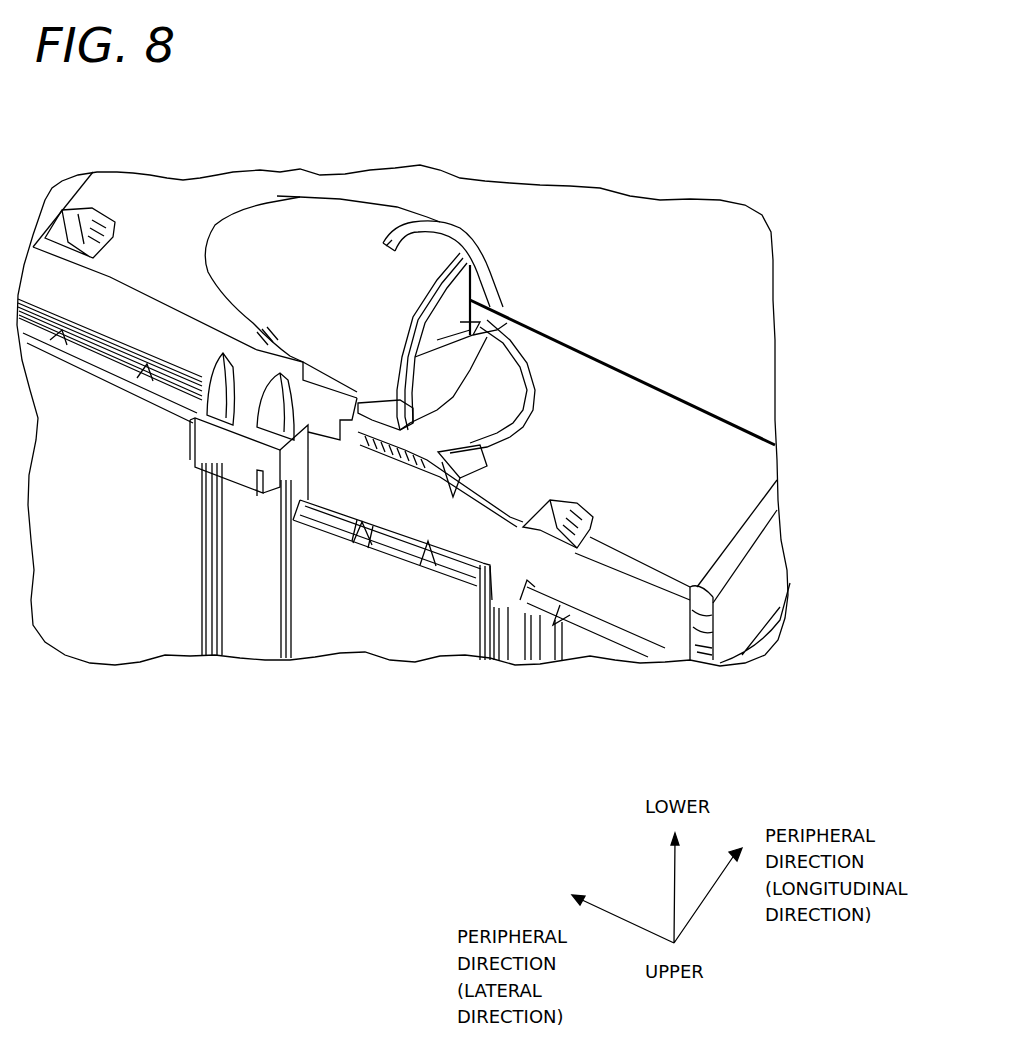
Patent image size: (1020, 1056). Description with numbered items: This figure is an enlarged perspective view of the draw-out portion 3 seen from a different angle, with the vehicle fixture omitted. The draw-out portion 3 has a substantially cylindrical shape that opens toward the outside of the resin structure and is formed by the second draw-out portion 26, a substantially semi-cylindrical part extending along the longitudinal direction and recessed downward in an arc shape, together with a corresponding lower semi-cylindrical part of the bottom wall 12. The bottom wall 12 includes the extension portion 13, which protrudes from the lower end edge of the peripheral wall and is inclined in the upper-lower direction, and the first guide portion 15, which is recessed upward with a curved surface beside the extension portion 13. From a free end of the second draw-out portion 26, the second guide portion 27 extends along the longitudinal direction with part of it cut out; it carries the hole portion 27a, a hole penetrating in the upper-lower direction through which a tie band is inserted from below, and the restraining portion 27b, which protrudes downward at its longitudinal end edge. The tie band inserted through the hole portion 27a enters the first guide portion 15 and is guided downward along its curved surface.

The draw-out portion 3 is at (343, 190).
The bottom wall 12 is at (402, 453).
The extension portion 13 is at (630, 520).
The first guide portion 15 is at (469, 523).
The second draw-out portion 26 is at (273, 232).
The second guide portion 27 is at (452, 275).
The hole portion 27a is at (439, 566).
The restraining portion 27b is at (500, 226).